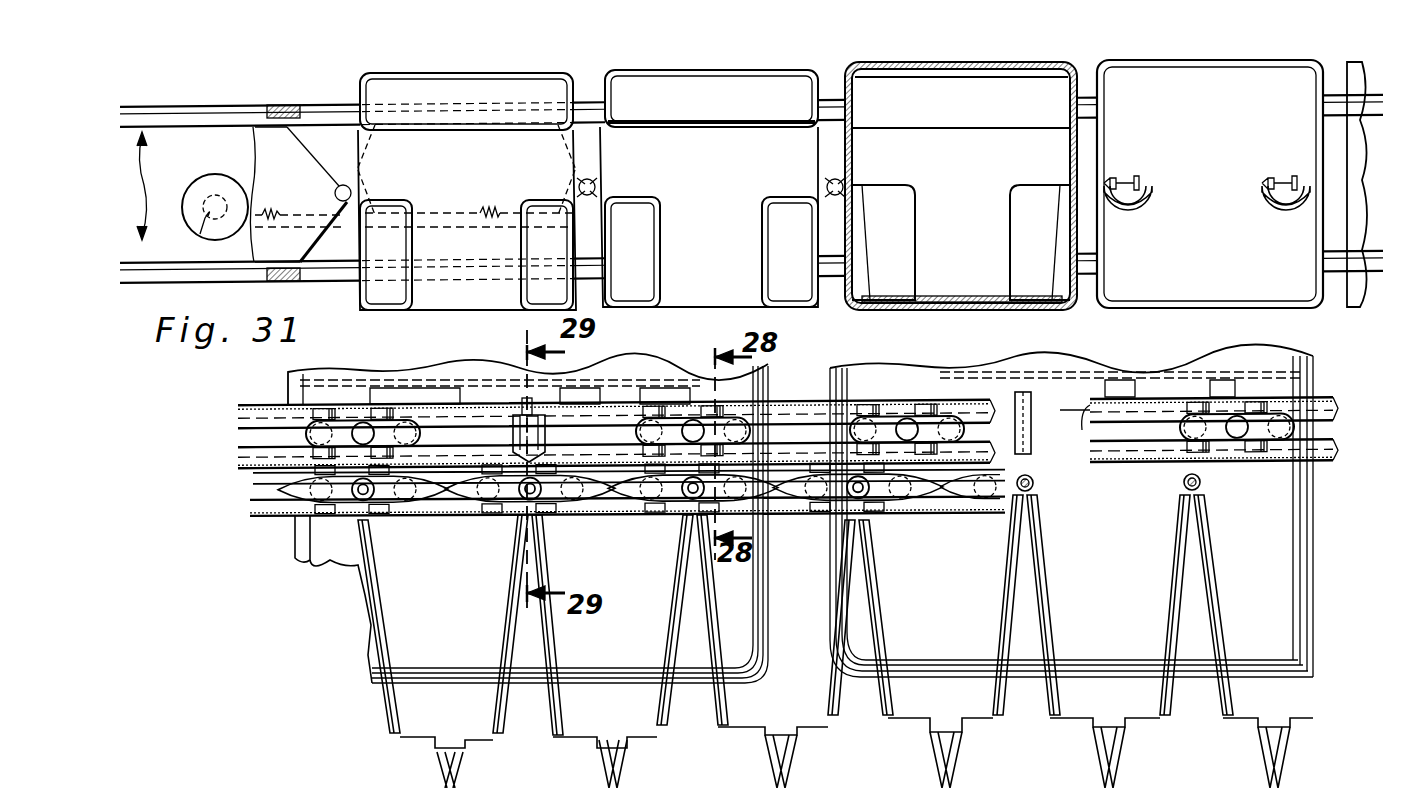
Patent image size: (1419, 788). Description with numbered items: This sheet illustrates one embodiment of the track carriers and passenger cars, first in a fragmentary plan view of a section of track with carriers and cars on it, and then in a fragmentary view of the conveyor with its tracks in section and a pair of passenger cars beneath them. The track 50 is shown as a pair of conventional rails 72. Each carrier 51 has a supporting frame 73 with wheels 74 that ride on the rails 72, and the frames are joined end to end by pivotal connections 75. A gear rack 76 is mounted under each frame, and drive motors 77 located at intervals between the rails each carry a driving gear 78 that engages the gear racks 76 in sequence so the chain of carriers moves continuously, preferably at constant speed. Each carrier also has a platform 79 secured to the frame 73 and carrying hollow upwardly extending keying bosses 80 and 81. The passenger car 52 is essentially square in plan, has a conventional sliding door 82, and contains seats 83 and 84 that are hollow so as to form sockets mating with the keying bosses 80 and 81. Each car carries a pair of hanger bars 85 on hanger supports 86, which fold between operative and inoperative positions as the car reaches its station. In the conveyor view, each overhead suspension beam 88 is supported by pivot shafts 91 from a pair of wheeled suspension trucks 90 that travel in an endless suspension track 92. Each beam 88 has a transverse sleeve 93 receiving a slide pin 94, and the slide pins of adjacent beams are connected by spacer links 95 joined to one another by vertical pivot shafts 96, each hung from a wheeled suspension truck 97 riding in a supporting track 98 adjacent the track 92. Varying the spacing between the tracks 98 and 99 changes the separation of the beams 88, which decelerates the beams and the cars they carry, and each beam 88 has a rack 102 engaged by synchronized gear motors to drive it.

In FIG. 31, the track 50 is at (140, 187).
In FIG. 31, the carrier 51 is at (498, 72).
In FIG. 31, the passenger car 52 is at (946, 64).
In FIG. 32, the passenger car 52 is at (460, 600).
In FIG. 31, the rails 72 is at (143, 107).
In FIG. 31, the supporting frame 73 is at (253, 152).
In FIG. 31, the wheels 74 is at (280, 106).
In FIG. 31, the pivotal connections 75 is at (345, 185).
In FIG. 31, the gear rack 76 is at (278, 213).
In FIG. 31, the drive motors 77 is at (198, 182).
In FIG. 31, the driving gear 78 is at (205, 236).
In FIG. 31, the platform 79 is at (452, 150).
In FIG. 31, the keying boss 80 is at (463, 92).
In FIG. 31, the keying boss 81 is at (383, 228).
In FIG. 31, the sliding door 82 is at (968, 308).
In FIG. 31, the seat 83 is at (970, 110).
In FIG. 31, the seat 84 is at (903, 242).
In FIG. 31, the hanger bars 85 is at (1122, 176).
In FIG. 31, the hanger supports 86 is at (1138, 208).
In FIG. 32, the suspension beam 88 is at (1080, 408).
In FIG. 32, the suspension truck 90 is at (400, 432).
In FIG. 32, the pivot shaft 91 is at (363, 420).
In FIG. 32, the suspension track 92 is at (248, 452).
In FIG. 32, the sleeve 93 is at (513, 432).
In FIG. 32, the slide pin 94 is at (532, 405).
In FIG. 32, the spacer links 95 is at (1185, 612).
In FIG. 32, the pivot shaft 96 is at (1034, 484).
In FIG. 32, the suspension truck 97 is at (612, 493).
In FIG. 32, the supporting track 98 is at (258, 478).
In FIG. 32, the track 99 is at (338, 786).
In FIG. 32, the rack 102 is at (522, 372).